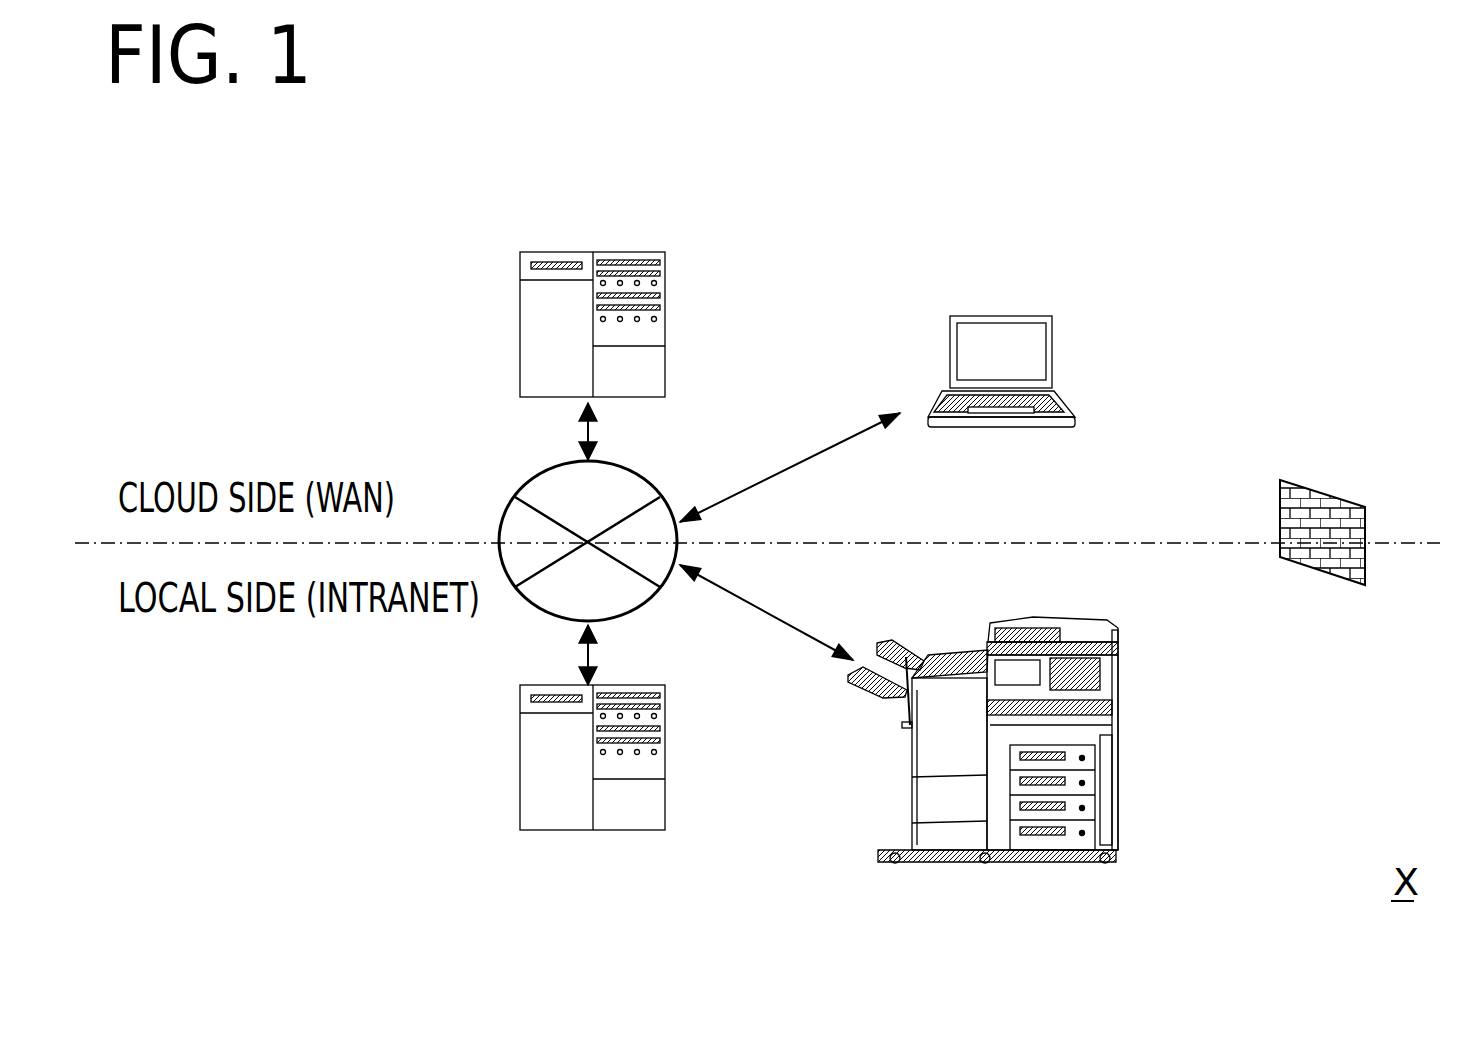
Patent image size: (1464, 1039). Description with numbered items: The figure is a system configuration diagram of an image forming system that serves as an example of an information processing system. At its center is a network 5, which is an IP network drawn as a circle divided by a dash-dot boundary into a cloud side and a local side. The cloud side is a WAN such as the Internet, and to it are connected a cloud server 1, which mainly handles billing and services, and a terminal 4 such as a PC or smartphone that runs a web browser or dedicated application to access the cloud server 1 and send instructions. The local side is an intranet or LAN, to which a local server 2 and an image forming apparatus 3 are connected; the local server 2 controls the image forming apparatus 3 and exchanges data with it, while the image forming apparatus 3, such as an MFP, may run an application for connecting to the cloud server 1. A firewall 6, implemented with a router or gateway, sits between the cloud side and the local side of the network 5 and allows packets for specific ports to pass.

The cloud server 1 is at (665, 310).
The local server 2 is at (665, 733).
The image forming apparatus 3 is at (1120, 725).
The terminal 4 is at (1052, 350).
The network 5 is at (643, 478).
The firewall 6 is at (1335, 495).